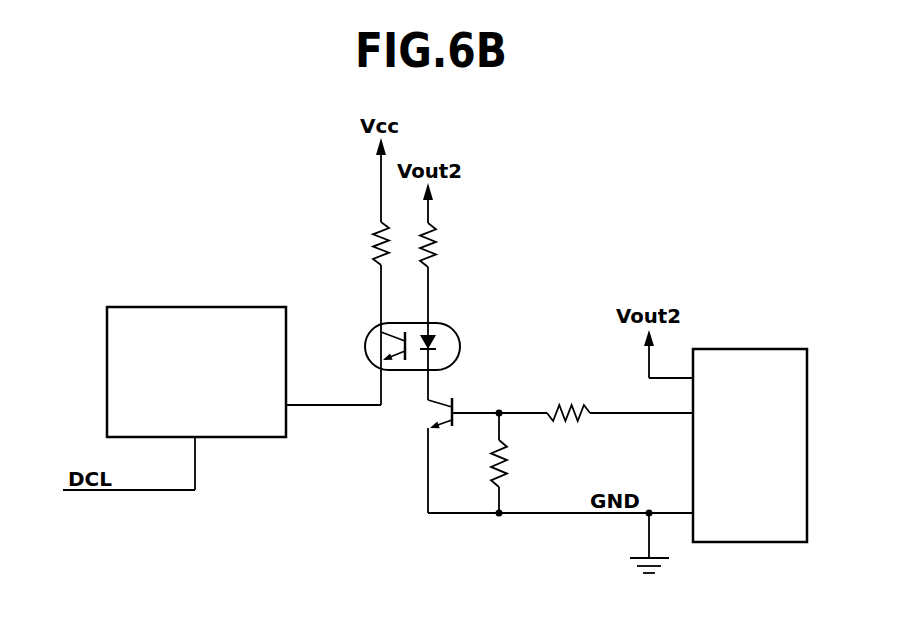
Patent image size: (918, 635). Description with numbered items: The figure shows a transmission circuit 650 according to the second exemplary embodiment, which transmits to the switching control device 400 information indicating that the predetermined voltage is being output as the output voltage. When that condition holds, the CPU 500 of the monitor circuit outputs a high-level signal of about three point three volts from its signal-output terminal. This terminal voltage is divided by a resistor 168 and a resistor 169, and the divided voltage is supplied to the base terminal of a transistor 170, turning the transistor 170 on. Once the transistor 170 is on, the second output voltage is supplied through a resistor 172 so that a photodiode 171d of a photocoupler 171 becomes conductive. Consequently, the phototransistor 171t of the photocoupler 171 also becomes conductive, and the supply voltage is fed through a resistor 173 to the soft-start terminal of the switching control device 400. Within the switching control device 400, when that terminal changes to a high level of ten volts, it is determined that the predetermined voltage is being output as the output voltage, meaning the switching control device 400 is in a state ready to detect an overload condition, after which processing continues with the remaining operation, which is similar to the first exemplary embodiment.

The switching control device 400 is at (185, 307).
The CPU 500 is at (748, 349).
The transmission circuit 650 is at (605, 211).
The resistor 168 is at (565, 405).
The resistor 169 is at (506, 460).
The transistor 170 is at (456, 407).
The photocoupler 171 is at (422, 322).
The phototransistor 171t is at (366, 344).
The photodiode 171d is at (461, 340).
The resistor 172 is at (437, 247).
The resistor 173 is at (372, 247).